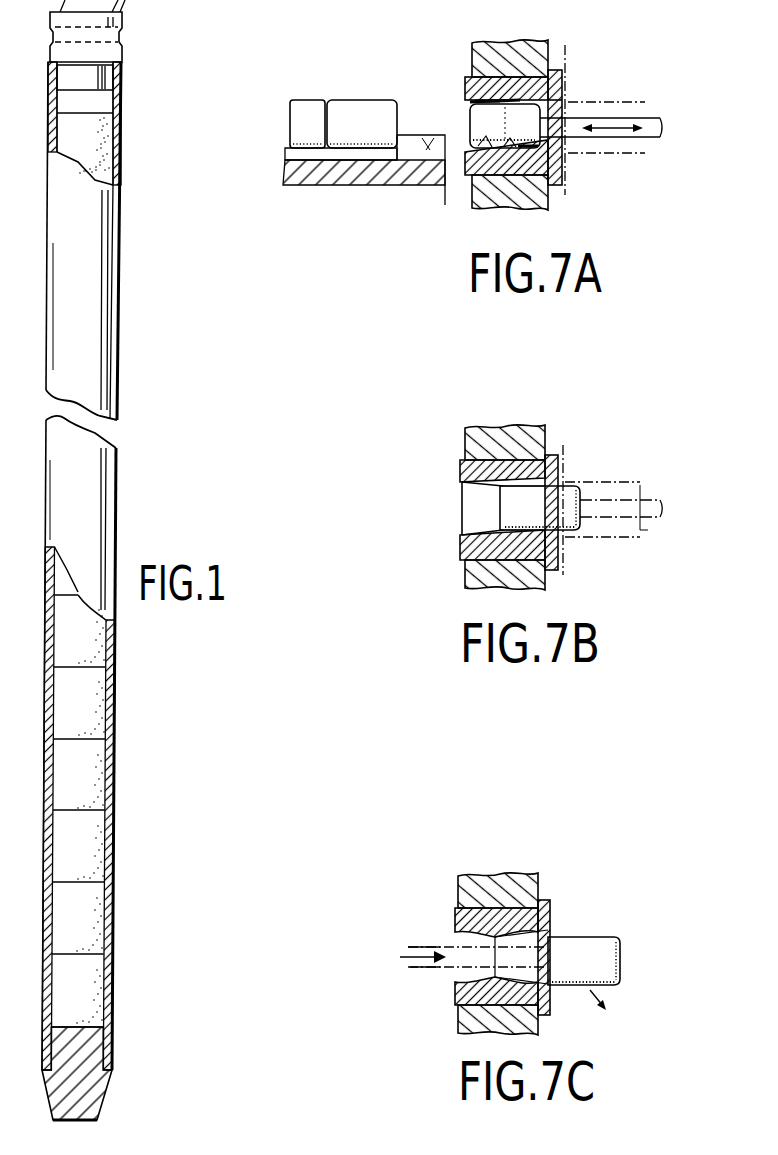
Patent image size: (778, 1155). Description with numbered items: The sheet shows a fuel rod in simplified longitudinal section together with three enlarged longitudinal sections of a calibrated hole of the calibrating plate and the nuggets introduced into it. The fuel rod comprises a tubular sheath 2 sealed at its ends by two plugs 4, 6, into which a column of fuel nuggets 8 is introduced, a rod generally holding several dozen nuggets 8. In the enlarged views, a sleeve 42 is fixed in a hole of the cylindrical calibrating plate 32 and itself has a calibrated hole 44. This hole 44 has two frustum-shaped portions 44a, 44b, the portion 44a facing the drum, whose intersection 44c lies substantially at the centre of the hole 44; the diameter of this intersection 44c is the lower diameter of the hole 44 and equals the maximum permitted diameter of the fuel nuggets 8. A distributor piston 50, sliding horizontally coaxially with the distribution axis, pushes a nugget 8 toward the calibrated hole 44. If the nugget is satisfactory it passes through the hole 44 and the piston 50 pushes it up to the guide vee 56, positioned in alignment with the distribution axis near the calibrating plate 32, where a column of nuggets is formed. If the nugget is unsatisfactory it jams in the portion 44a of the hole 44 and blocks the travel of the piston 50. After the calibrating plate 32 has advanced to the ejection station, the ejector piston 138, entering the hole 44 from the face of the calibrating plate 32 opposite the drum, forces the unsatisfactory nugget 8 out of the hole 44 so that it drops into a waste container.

In FIG. 1, the tubular sheath 2 is at (114, 851).
In FIG. 1, the plug 4 is at (93, 1080).
In FIG. 1, the plug 6 is at (122, 22).
In FIG. 1, the fuel nugget 8 is at (90, 760).
In FIG. 7A, the fuel nugget 8 is at (315, 107).
In FIG. 7B, the fuel nugget 8 is at (568, 530).
In FIG. 7C, the fuel nugget 8 is at (600, 940).
In FIG. 7A, the calibrating plate 32 is at (536, 45).
In FIG. 7B, the calibrating plate 32 is at (530, 433).
In FIG. 7C, the calibrating plate 32 is at (518, 882).
In FIG. 7A, the sleeve 42 is at (562, 77).
In FIG. 7B, the sleeve 42 is at (555, 470).
In FIG. 7C, the sleeve 42 is at (552, 915).
In FIG. 7A, the calibrated hole 44 is at (469, 142).
In FIG. 7B, the calibrated hole 44 is at (465, 485).
In FIG. 7A, the frustum-shaped portion 44a is at (565, 102).
In FIG. 7A, the frustum-shaped portion 44b is at (472, 107).
In FIG. 7A, the intersection 44c is at (520, 136).
In FIG. 7A, the distributor piston 50 is at (658, 137).
In FIG. 7B, the distributor piston 50 is at (648, 518).
In FIG. 7A, the guide vee 56 is at (305, 155).
In FIG. 7C, the ejector piston 138 is at (420, 943).